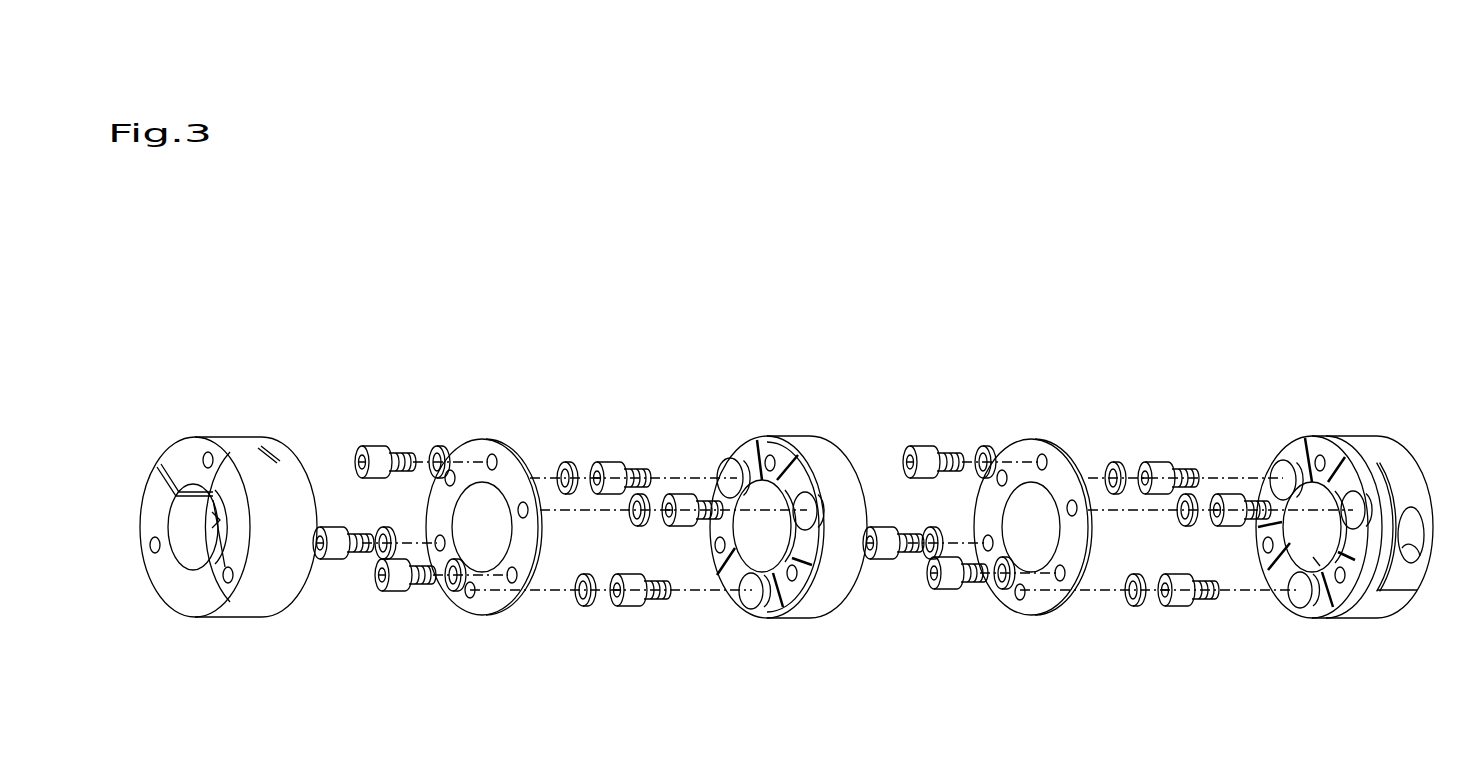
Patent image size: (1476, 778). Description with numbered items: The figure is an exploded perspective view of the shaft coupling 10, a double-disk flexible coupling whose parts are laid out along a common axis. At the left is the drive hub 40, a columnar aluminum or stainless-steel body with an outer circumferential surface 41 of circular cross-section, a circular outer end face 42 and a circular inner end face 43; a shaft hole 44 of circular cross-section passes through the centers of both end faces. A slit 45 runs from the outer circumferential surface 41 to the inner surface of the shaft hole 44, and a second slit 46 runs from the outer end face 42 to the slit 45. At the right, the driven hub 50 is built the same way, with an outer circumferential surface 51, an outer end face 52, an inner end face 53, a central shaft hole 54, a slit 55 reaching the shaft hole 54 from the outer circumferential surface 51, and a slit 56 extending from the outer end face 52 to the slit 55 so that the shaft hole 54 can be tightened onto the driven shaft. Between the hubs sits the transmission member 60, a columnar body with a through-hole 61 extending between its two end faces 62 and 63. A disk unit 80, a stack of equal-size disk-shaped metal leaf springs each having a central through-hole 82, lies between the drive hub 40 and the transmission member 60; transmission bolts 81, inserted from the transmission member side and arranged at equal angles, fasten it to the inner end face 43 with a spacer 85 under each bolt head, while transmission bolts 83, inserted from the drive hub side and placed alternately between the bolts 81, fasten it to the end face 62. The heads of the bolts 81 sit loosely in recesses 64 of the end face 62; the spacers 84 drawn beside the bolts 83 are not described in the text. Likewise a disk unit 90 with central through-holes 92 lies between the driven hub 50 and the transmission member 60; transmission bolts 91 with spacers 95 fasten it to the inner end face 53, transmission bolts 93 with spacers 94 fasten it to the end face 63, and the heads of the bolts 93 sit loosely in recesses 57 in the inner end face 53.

The shaft coupling 10 is at (766, 348).
The drive hub 40 is at (272, 440).
The outer circumferential surface 41 is at (278, 600).
The outer end face 42 is at (193, 607).
The inner end face 43 is at (307, 577).
The shaft hole 44 is at (178, 552).
The slit 45 is at (162, 508).
The slit 46 is at (172, 465).
The driven hub 50 is at (1347, 437).
The outer circumferential surface 51 is at (1408, 490).
The outer end face 52 is at (1422, 575).
The inner end face 53 is at (1320, 610).
The shaft hole 54 is at (1290, 558).
The slit 55 is at (1375, 612).
The slit 56 is at (1385, 598).
The recesses 57 is at (1278, 465).
The transmission member 60 is at (800, 438).
The through-hole 61 is at (766, 514).
The end face 62 is at (770, 610).
The end face 63 is at (845, 590).
The recesses 64 is at (725, 462).
The disk unit 80 is at (505, 440).
The transmission bolts 81 is at (625, 462).
The through-hole 82 is at (495, 553).
The transmission bolts 83 is at (383, 448).
The washers 84 is at (440, 447).
The spacer 85 is at (565, 462).
The disk unit 90 is at (1045, 440).
The transmission bolts 91 is at (880, 526).
The through-hole 92 is at (1043, 553).
The transmission bolts 93 is at (1175, 462).
The spacer 94 is at (1113, 462).
The spacer 95 is at (938, 530).